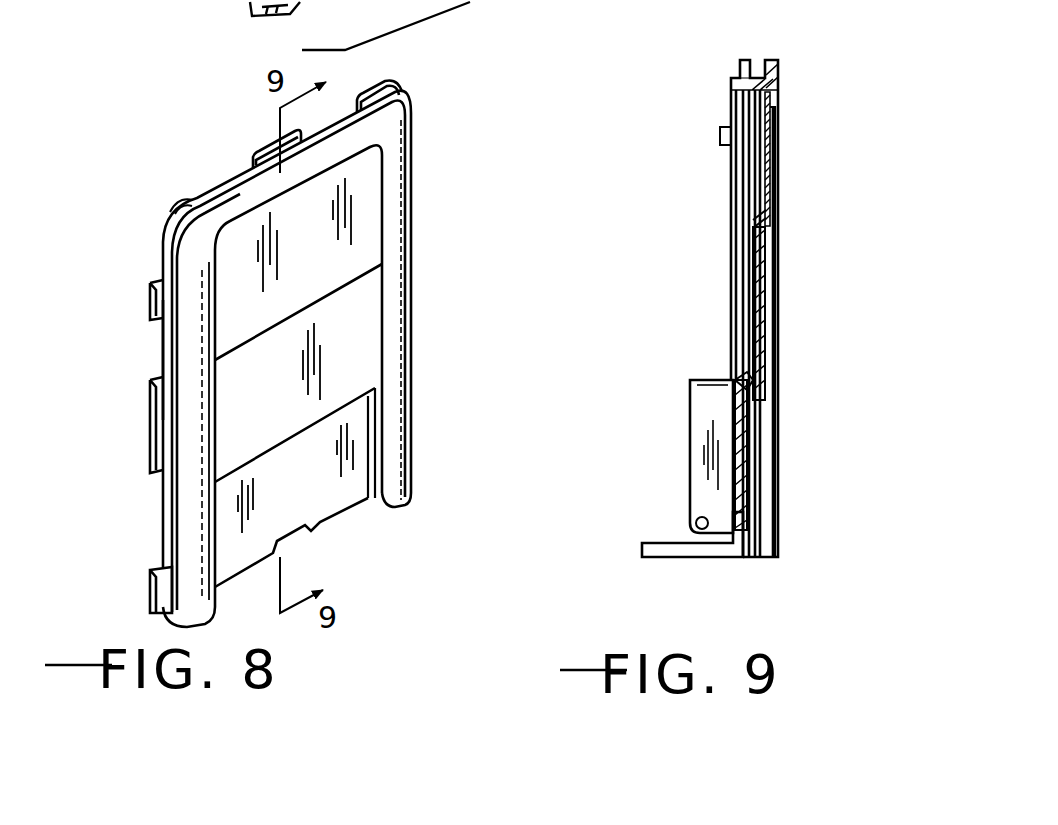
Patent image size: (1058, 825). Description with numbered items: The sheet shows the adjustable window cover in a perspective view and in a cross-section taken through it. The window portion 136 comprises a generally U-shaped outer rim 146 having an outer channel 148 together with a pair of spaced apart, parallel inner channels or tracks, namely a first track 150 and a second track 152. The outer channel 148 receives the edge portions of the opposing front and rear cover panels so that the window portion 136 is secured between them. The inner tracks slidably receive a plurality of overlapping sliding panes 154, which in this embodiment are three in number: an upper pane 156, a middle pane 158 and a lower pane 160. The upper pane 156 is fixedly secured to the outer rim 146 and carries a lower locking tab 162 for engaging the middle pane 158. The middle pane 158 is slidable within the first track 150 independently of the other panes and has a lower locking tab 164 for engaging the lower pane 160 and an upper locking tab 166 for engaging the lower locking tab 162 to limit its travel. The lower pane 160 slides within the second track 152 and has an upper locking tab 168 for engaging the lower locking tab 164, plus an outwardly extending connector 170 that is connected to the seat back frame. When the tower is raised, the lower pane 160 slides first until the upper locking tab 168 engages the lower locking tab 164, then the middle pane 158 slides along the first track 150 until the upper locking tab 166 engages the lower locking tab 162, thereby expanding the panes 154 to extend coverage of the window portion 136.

In FIG. 8, the window portion 136 is at (190, 160).
In FIG. 9, the window portion 136 is at (801, 92).
In FIG. 8, the outer rim 146 is at (387, 129).
In FIG. 9, the outer rim 146 is at (710, 293).
In FIG. 8, the outer channel 148 is at (167, 242).
In FIG. 9, the outer channel 148 is at (757, 72).
In FIG. 9, the first inner channel or track 150 is at (758, 478).
In FIG. 9, the second inner channel or track 152 is at (747, 300).
In FIG. 8, the sliding panes 154 is at (366, 212).
In FIG. 8, the upper pane 156 is at (223, 320).
In FIG. 9, the upper pane 156 is at (771, 153).
In FIG. 8, the middle pane 158 is at (223, 420).
In FIG. 9, the middle pane 158 is at (766, 300).
In FIG. 8, the lower pane 160 is at (223, 517).
In FIG. 9, the lower pane 160 is at (748, 440).
In FIG. 9, the lower locking tab 162 is at (766, 260).
In FIG. 9, the lower locking tab 164 is at (750, 402).
In FIG. 9, the upper locking tab 166 is at (762, 226).
In FIG. 9, the upper locking tab 168 is at (747, 375).
In FIG. 9, the connector 170 is at (693, 483).